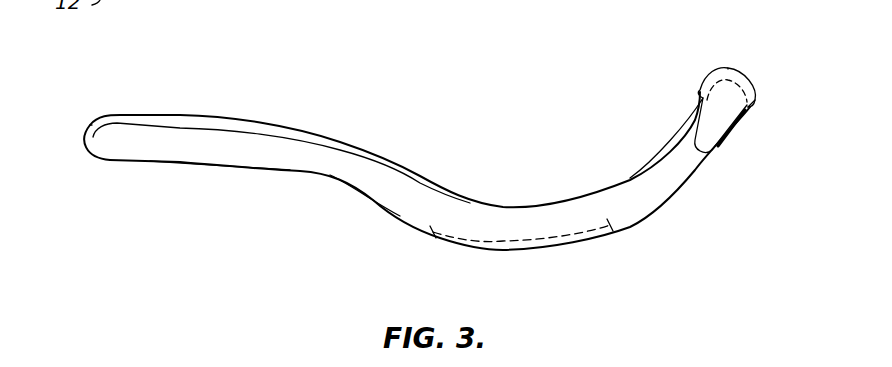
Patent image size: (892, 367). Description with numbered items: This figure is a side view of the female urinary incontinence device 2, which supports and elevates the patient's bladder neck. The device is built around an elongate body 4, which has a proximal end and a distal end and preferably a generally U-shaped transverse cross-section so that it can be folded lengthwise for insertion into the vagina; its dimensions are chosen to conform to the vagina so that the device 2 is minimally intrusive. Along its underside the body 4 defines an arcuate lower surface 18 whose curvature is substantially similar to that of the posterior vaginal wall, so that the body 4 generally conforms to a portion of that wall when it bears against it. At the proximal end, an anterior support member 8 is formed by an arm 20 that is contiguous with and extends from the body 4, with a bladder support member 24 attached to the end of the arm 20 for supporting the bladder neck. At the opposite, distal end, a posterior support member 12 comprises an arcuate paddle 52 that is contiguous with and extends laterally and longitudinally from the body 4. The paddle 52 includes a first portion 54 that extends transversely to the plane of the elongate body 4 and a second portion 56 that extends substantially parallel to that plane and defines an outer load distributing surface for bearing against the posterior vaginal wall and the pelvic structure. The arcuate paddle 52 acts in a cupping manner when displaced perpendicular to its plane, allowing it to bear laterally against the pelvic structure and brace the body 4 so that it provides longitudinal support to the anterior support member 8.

The female urinary incontinence device 2 is at (777, 44).
The elongate body 4 is at (495, 260).
The second anterior support member 8 is at (764, 104).
The second posterior support member 12 is at (124, 173).
The arcuate lower surface 18 is at (575, 246).
The arm 20 is at (703, 170).
The bladder support member 24 is at (727, 68).
The arcuate paddle 52 is at (298, 160).
The first portion 54 is at (412, 218).
The second portion 56 is at (253, 126).